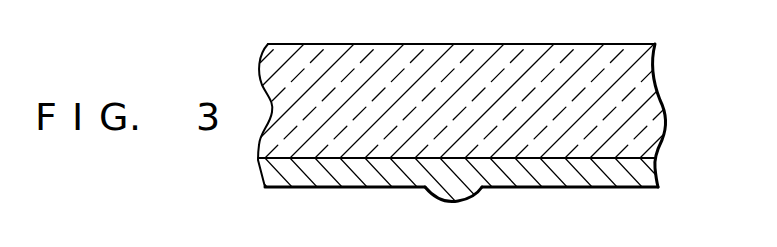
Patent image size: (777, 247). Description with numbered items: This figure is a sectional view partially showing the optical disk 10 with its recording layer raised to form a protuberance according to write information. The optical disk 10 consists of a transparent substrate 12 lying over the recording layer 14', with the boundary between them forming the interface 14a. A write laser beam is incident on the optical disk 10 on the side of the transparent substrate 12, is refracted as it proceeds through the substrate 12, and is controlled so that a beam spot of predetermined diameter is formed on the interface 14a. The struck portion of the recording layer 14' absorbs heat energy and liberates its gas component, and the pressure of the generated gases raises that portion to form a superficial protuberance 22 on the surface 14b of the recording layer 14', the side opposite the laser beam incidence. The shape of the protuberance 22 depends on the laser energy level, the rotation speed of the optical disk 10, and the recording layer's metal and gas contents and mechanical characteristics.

The optical disk 10 is at (670, 97).
The transparent substrate 12 is at (659, 68).
The interface 14a is at (647, 144).
The bonding layer 14' is at (471, 178).
The surface of the recording layer 14b is at (648, 190).
The protuberance 22 is at (466, 198).